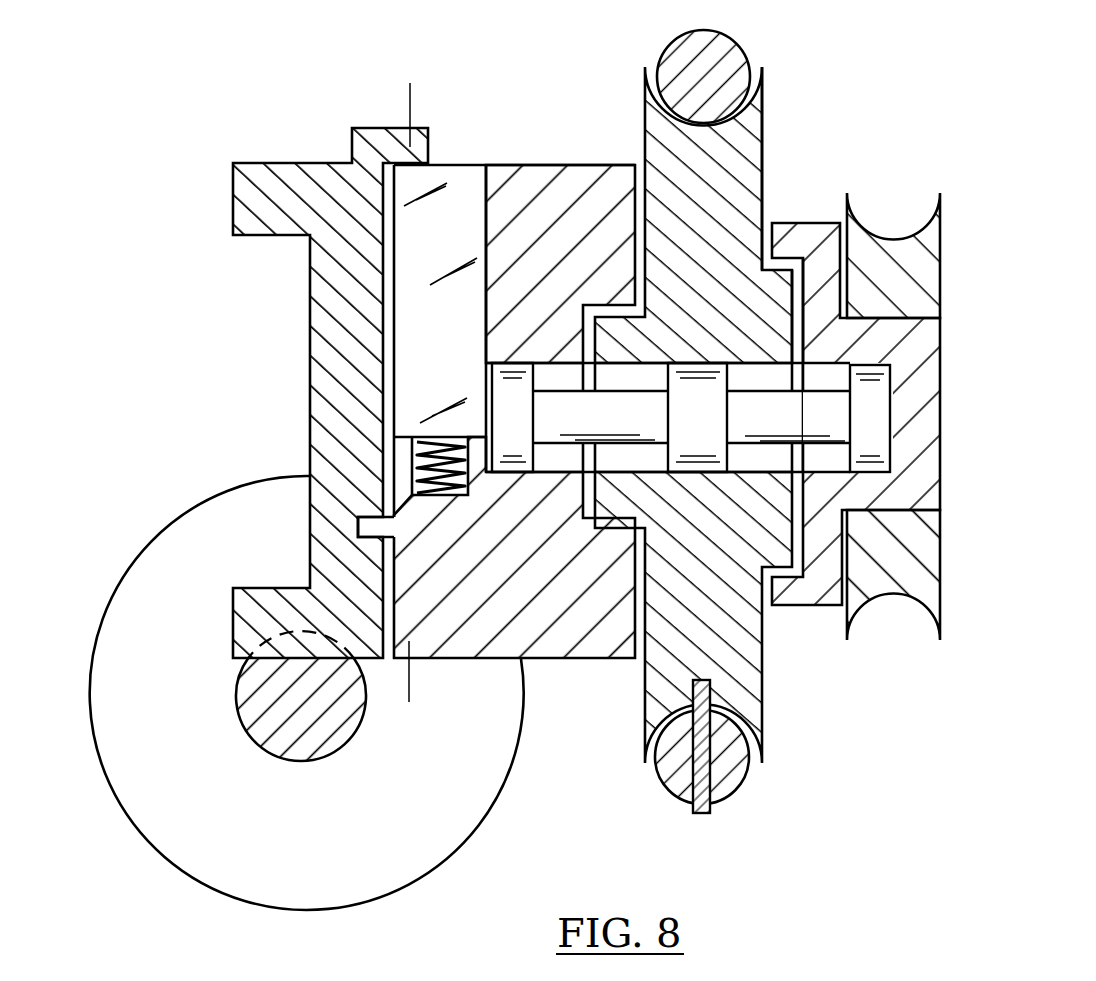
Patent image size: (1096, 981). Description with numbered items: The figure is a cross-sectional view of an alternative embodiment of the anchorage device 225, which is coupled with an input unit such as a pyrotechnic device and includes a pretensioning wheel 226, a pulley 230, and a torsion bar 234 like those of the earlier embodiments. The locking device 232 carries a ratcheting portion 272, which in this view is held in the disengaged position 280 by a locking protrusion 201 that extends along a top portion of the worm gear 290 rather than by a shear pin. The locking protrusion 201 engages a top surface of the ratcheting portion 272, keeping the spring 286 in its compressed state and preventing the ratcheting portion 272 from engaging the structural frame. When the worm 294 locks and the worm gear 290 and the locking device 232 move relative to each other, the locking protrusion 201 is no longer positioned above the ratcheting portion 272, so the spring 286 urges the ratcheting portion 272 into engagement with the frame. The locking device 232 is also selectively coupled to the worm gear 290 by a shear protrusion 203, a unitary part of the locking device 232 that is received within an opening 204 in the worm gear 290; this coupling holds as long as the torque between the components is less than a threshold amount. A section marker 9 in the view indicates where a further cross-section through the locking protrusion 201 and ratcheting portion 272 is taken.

The section line 9- 9 is at (410, 93).
The locking protrusion 201 is at (417, 128).
The shear protrusion 203 is at (360, 538).
The opening 204 is at (358, 528).
The anchorage device 225 is at (795, 172).
The pretensioning wheel 226 is at (832, 212).
The pulley 230 is at (760, 140).
The locking device 232 is at (605, 165).
The torsion bar 234 is at (825, 390).
The ratcheting portion 272 is at (487, 217).
The disengaged position 280 is at (458, 163).
The spring 286 is at (415, 452).
The worm gear 290 is at (282, 163).
The worm 294 is at (316, 762).